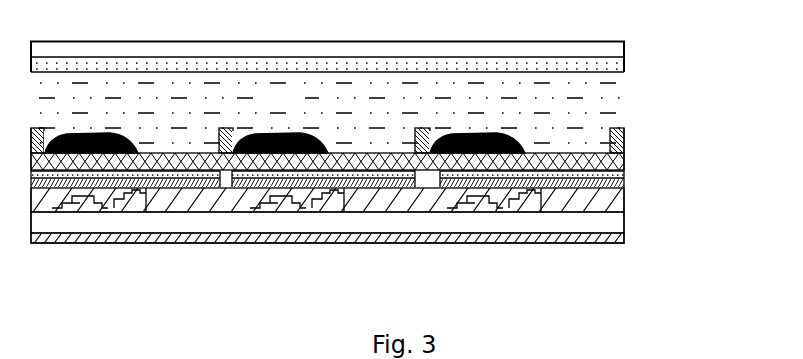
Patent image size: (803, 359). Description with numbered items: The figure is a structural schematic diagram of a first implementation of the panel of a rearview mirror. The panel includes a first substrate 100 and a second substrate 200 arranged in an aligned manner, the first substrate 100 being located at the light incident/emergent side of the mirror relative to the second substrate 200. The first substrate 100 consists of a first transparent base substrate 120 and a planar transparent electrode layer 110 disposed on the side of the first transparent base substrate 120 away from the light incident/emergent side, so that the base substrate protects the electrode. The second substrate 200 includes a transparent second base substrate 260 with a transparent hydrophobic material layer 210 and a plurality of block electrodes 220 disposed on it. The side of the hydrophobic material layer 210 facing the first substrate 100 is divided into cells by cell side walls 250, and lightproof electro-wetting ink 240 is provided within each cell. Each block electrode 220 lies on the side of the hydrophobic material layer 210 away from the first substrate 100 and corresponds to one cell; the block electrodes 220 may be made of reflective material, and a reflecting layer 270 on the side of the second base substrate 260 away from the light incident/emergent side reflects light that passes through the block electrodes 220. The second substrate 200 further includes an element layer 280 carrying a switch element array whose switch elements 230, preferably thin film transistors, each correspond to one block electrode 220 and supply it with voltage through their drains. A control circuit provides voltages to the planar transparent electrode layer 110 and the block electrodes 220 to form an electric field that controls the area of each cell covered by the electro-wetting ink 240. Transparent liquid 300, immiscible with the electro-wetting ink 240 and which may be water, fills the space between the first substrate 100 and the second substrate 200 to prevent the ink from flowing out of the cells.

The first substrate 100 is at (703, 27).
The planar transparent electrode layer 110 is at (621, 56).
The first transparent base substrate 120 is at (623, 45).
The transparent liquid 300 is at (297, 106).
The second substrate 200 is at (699, 277).
The transparent hydrophobic material layer 210 is at (624, 162).
The block electrodes 220 is at (624, 181).
The switch elements 230 is at (543, 212).
The electro-wetting ink 240 is at (522, 136).
The cell side walls 250 is at (624, 147).
The second base substrate 260 is at (609, 222).
The reflecting layer 270 is at (607, 238).
The element layer 280 is at (624, 200).